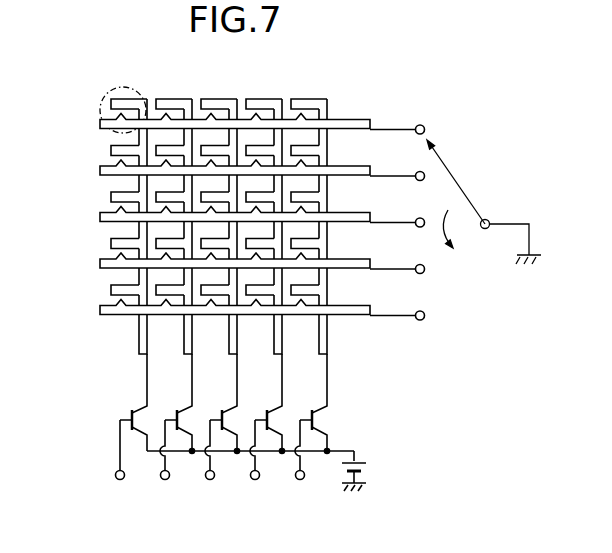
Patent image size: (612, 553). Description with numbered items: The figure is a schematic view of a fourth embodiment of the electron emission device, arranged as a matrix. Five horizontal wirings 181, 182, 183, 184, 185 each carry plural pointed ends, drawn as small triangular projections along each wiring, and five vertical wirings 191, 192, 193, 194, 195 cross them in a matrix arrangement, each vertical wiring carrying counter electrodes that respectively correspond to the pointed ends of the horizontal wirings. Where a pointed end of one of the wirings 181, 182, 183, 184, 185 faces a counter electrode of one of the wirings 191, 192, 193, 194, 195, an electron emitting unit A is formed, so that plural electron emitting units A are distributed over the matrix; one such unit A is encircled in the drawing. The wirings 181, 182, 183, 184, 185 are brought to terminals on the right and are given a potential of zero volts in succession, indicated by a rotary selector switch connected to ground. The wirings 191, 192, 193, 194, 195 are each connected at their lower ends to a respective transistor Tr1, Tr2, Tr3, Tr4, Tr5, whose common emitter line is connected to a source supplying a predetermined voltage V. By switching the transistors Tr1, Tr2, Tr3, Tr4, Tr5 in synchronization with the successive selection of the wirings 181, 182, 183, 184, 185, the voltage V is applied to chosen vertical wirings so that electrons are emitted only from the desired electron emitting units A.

The wiring 181 is at (363, 119).
The wiring 182 is at (366, 166).
The wiring 183 is at (366, 212).
The wiring 184 is at (366, 259).
The wiring 185 is at (366, 306).
The wiring 191 is at (139, 337).
The wiring 192 is at (183, 348).
The wiring 193 is at (228, 348).
The wiring 194 is at (273, 348).
The wiring 195 is at (318, 348).
The transistor Tr1 is at (131, 412).
The transistor Tr2 is at (176, 412).
The transistor Tr3 is at (221, 412).
The transistor Tr4 is at (266, 412).
The transistor Tr5 is at (311, 412).
The electron emitting unit A is at (98, 107).
The predetermined voltage V is at (362, 471).